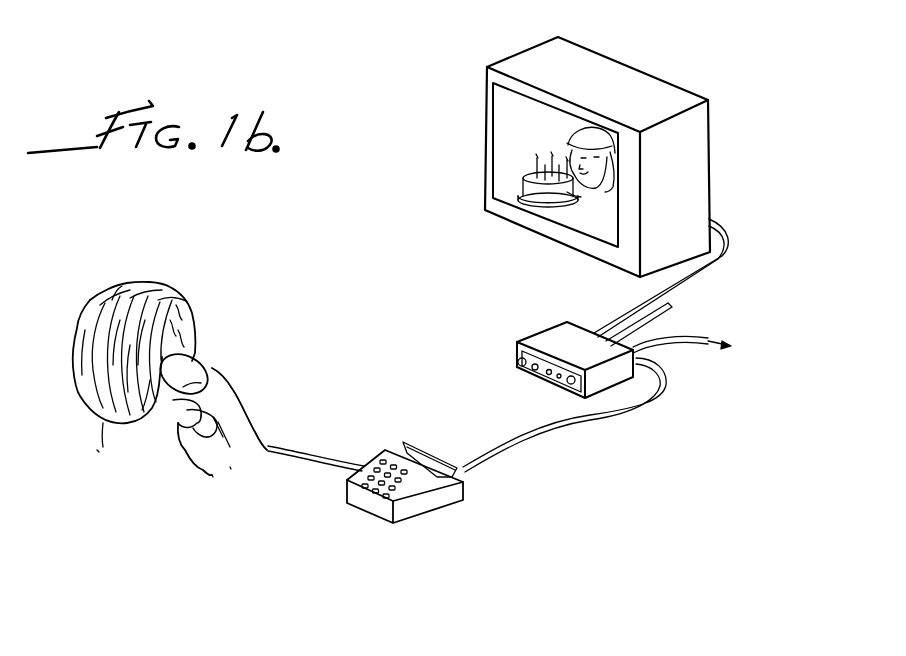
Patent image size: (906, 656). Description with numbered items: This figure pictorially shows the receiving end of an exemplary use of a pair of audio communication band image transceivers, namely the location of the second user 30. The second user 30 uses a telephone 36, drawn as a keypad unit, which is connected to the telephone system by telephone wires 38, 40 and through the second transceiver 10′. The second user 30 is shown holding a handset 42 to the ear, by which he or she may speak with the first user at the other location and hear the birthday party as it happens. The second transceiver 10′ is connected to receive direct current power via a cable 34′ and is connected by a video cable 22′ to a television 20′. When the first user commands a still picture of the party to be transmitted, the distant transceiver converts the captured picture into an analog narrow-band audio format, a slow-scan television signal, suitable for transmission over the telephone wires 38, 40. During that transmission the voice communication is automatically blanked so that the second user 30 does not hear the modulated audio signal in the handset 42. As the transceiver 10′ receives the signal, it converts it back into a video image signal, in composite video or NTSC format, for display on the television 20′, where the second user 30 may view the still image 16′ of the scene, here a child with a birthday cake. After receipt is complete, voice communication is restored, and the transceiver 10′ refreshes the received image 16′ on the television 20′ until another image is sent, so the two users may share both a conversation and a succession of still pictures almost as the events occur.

The television 20′ is at (619, 62).
The still image 16′ is at (516, 157).
The video cable 22′ is at (681, 283).
The cable 34′ is at (661, 315).
The telephone wire 38 is at (679, 348).
The telephone wire 40 is at (562, 432).
The second transceiver 10′ is at (538, 328).
The telephone 36 is at (397, 438).
The second user 30 is at (193, 293).
The handset 42 is at (193, 365).